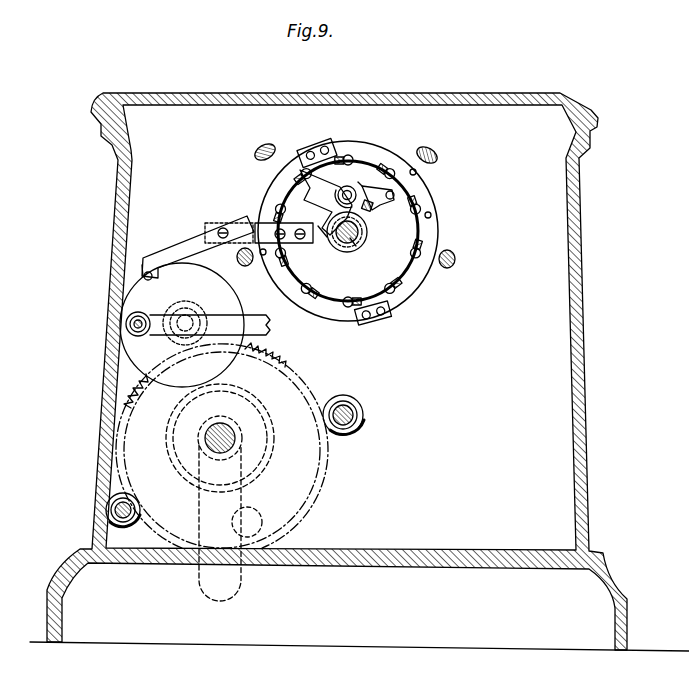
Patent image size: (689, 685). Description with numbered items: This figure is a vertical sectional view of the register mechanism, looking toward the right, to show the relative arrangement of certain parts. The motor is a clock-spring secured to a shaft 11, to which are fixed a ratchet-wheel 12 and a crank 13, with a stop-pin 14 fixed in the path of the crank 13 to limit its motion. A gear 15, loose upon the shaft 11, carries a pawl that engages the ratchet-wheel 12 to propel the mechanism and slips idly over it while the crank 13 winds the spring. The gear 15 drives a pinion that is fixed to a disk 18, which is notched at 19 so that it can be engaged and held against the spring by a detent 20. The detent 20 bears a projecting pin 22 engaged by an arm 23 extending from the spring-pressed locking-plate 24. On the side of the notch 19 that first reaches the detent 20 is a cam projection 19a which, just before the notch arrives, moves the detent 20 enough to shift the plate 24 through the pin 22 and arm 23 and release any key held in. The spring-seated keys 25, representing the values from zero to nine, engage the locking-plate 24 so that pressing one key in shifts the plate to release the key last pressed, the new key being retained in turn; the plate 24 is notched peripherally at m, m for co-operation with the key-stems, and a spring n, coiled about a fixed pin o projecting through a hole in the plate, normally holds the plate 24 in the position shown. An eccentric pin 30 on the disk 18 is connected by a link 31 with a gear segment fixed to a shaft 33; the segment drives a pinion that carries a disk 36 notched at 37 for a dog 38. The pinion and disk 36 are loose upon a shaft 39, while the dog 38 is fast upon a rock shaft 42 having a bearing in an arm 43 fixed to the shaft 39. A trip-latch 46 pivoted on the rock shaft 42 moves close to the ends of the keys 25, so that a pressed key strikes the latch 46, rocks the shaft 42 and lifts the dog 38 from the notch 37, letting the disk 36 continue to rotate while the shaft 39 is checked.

The shaft 11 is at (220, 424).
The ratchet-wheel 12 is at (267, 457).
The crank 13 is at (198, 503).
The stop-pin 14 is at (252, 517).
The gear 15 is at (128, 398).
The disk 18 is at (196, 266).
The notch 19 is at (150, 268).
The cam projection 19a is at (143, 277).
The detent 20 is at (165, 254).
The projecting pin 22 is at (223, 232).
The arm 23 is at (237, 258).
The locking-plate 24 is at (378, 303).
The keys 25 is at (305, 170).
The eccentric pin 30 is at (127, 323).
The link 31 is at (252, 317).
The shaft 33 is at (364, 416).
The disk 36 is at (343, 250).
The notch 37 is at (327, 235).
The dog 38 is at (310, 208).
The shaft 39 is at (352, 240).
The rock shaft 42 is at (368, 182).
The arm 43 is at (365, 212).
The trip-latch 46 is at (323, 180).
The peripheral notches m is at (258, 154).
The spring n is at (368, 181).
The fixed pin o is at (390, 200).